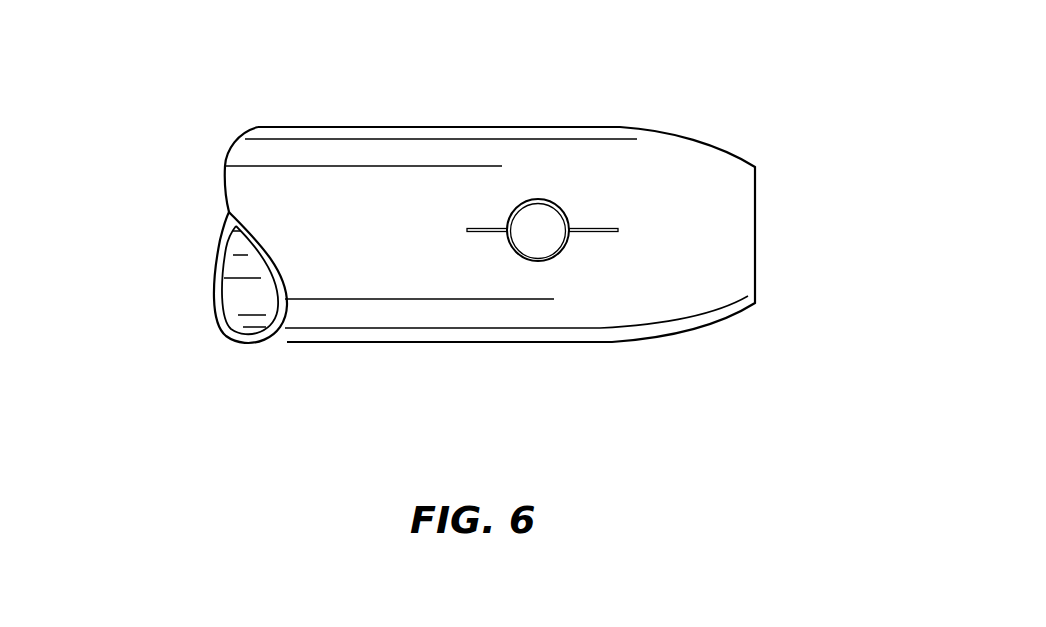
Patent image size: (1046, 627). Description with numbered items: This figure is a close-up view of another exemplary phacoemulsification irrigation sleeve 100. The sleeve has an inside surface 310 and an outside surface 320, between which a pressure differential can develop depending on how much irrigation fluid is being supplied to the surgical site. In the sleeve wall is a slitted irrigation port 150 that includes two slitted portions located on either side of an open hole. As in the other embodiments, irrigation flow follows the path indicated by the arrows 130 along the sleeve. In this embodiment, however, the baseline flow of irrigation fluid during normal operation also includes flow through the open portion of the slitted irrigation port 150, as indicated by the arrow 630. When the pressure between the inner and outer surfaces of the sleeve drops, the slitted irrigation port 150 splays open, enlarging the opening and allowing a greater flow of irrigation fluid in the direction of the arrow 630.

The catheter device 100 is at (307, 77).
The arrows 130 is at (215, 165).
The slitted irrigation port 150 is at (525, 200).
The inside surface 310 is at (253, 310).
The outside surface 320 is at (383, 343).
The arrow 630 is at (538, 230).